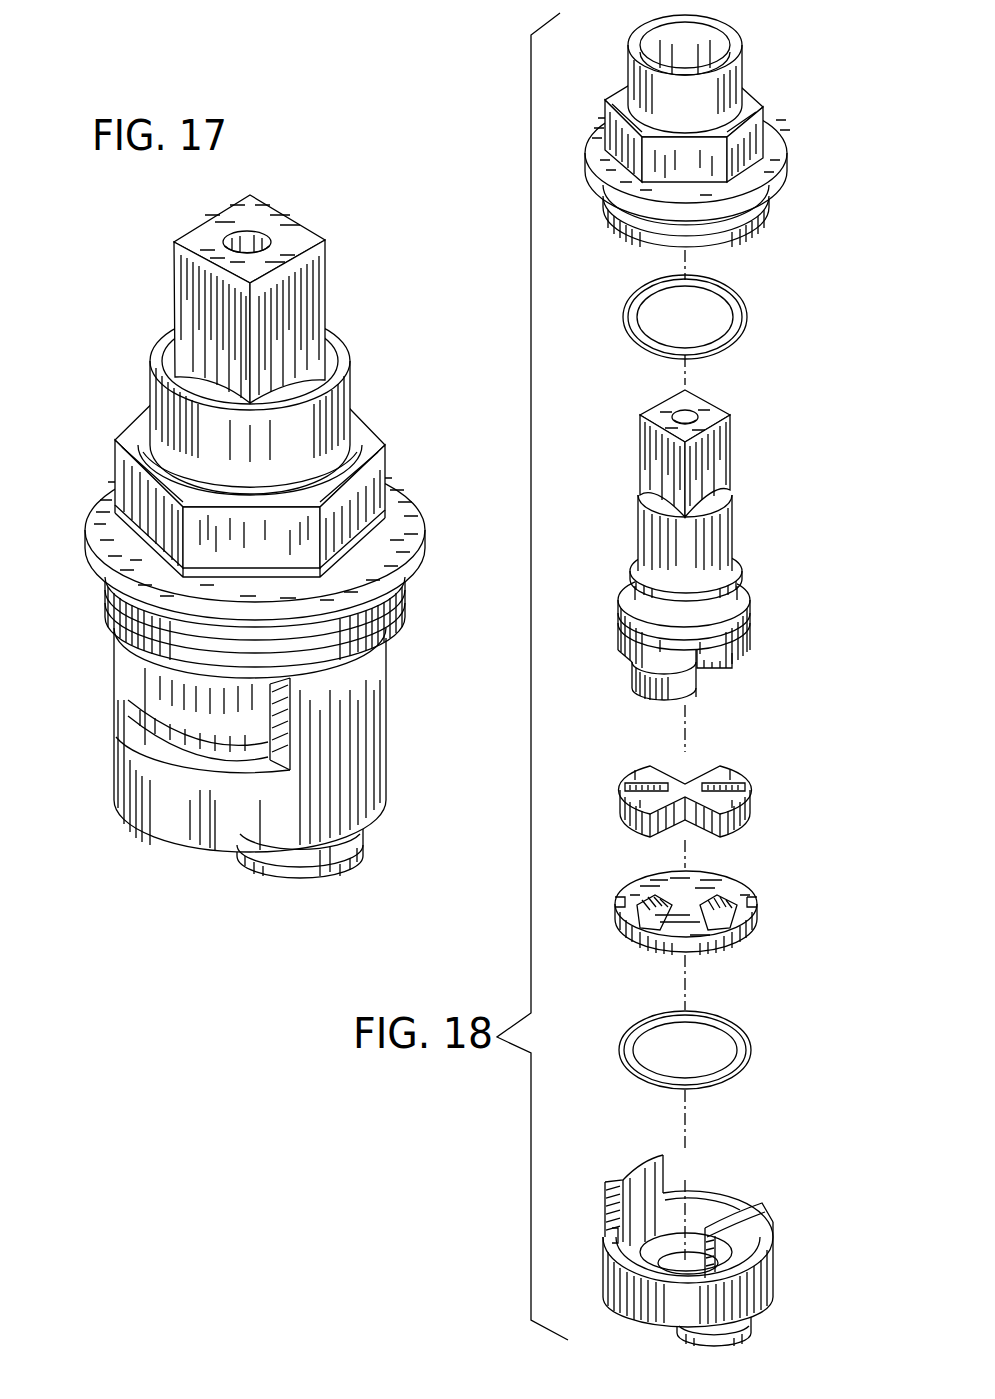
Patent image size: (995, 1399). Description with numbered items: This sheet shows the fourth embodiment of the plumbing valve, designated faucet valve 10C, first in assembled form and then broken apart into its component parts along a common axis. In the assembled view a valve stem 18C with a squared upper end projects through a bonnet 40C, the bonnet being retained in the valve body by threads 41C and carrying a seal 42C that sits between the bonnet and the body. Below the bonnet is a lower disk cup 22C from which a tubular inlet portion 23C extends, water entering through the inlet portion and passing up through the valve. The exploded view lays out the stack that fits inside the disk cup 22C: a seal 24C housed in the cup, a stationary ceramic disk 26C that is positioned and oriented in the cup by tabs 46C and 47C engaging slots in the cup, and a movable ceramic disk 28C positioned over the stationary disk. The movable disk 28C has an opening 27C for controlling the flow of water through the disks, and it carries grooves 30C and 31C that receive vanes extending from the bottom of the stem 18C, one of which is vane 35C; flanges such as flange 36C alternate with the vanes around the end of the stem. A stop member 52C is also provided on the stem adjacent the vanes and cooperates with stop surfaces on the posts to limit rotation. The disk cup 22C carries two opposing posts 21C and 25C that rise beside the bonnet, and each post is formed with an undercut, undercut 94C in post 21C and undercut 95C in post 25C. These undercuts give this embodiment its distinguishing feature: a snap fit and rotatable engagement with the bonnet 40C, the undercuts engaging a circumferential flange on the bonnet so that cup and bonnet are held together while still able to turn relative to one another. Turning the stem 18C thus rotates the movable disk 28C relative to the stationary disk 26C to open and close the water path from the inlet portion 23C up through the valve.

In FIG. 17, the faucet valve 10C is at (95, 461).
In FIG. 17, the valve stem 18C is at (282, 332).
In FIG. 18, the valve stem 18C is at (732, 532).
In FIG. 17, the post 21C is at (375, 672).
In FIG. 18, the post 21C is at (765, 1237).
In FIG. 17, the lower disk cup 22C is at (203, 828).
In FIG. 18, the lower disk cup 22C is at (665, 1308).
In FIG. 17, the tubular inlet portion 23C is at (350, 862).
In FIG. 18, the tubular inlet portion 23C is at (750, 1327).
In FIG. 18, the seal 24C is at (753, 1053).
In FIG. 18, the post 25C is at (610, 1213).
In FIG. 18, the stationary disk 26C is at (725, 885).
In FIG. 18, the opening 27C is at (630, 900).
In FIG. 18, the movable disk 28C is at (727, 765).
In FIG. 18, the groove 30C is at (620, 798).
In FIG. 18, the groove 31C is at (753, 792).
In FIG. 18, the vane 35C is at (728, 670).
In FIG. 18, the flange 36C is at (623, 647).
In FIG. 17, the bonnet 40C is at (382, 450).
In FIG. 18, the bonnet 40C is at (748, 133).
In FIG. 17, the threads 41C is at (347, 635).
In FIG. 18, the threads 41C is at (757, 227).
In FIG. 18, the seal 42C is at (738, 292).
In FIG. 18, the tab 46C is at (625, 937).
In FIG. 18, the tab 47C is at (753, 937).
In FIG. 17, the stop member 52C is at (133, 748).
In FIG. 18, the stop member 52C is at (678, 692).
In FIG. 18, the undercut 94C is at (760, 1217).
In FIG. 18, the undercut 95C is at (617, 1188).